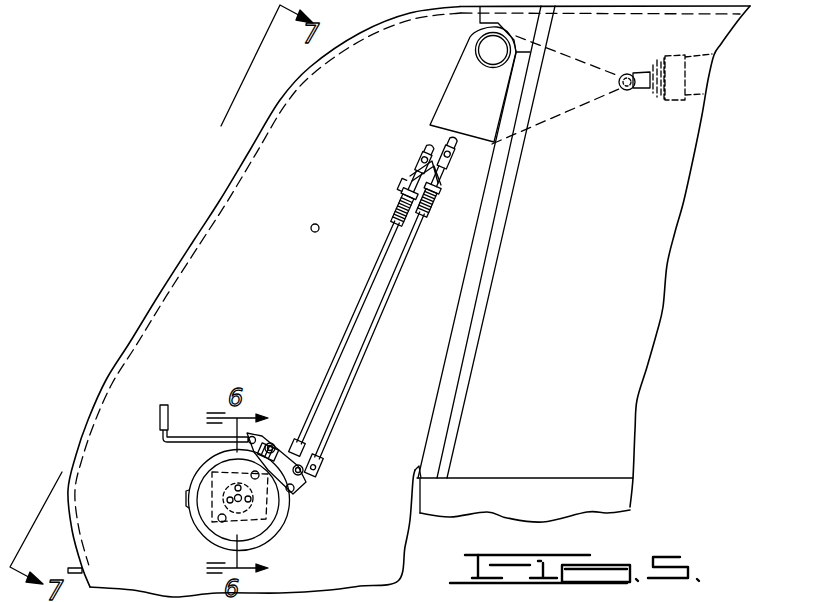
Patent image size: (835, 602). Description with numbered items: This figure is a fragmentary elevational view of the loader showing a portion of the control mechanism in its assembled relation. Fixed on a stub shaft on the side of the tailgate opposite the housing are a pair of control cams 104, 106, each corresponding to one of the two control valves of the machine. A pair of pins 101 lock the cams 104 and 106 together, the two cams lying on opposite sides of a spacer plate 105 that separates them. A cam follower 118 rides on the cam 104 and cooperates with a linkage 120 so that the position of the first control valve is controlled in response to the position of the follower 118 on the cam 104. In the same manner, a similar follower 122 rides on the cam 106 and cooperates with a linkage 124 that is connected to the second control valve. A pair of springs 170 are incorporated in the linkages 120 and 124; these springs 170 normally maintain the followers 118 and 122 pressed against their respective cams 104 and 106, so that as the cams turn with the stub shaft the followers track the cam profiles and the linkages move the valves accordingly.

The pins 101 is at (251, 473).
The control cam 104 is at (287, 523).
The spacer plate 105 is at (300, 499).
The control cam 106 is at (267, 543).
The cam follower 118 is at (305, 452).
The linkage 120 is at (362, 295).
The follower 122 is at (302, 489).
The linkage 124 is at (389, 297).
The springs 170 is at (391, 207).